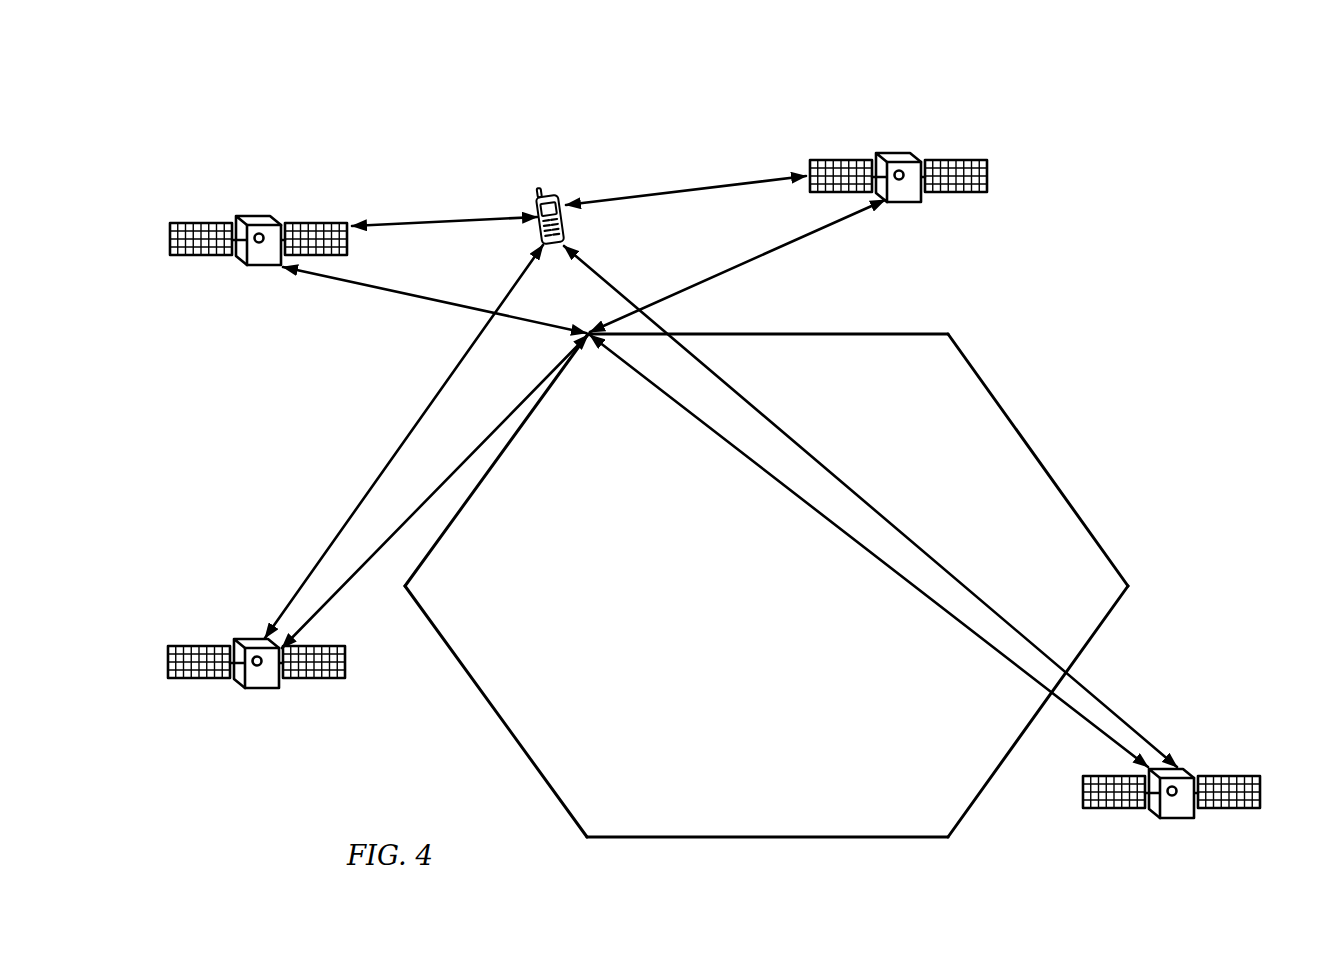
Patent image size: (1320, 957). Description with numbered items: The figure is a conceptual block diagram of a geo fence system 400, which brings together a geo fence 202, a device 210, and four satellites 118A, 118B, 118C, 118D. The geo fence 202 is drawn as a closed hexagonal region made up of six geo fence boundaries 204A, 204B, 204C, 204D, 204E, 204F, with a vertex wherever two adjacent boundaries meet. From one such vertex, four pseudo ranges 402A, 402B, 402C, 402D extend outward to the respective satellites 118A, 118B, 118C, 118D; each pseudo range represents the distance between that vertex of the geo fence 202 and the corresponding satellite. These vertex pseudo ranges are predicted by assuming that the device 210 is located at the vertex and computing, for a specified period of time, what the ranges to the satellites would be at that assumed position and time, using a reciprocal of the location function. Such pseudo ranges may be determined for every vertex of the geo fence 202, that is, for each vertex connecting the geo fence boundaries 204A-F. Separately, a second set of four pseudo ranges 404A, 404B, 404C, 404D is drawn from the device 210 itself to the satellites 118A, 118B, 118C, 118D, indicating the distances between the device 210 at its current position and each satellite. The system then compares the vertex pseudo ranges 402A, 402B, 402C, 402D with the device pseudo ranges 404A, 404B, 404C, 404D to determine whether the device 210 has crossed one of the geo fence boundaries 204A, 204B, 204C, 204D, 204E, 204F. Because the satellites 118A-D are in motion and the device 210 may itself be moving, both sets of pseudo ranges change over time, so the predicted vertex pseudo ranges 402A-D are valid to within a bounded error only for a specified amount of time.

The geo fence system 400 is at (178, 102).
The satellite 118A is at (258, 222).
The satellite 118B is at (900, 158).
The satellite 118C is at (255, 645).
The satellite 118D is at (1172, 818).
The device 210 is at (552, 196).
The geo fence 202 is at (766, 551).
The geo fence boundary 204A is at (795, 334).
The geo fence boundary 204B is at (462, 508).
The geo fence boundary 204C is at (514, 735).
The geo fence boundary 204D is at (808, 837).
The geo fence boundary 204E is at (1073, 662).
The geo fence boundary 204F is at (1062, 492).
The pseudo range 402A is at (435, 299).
The pseudo range 402B is at (685, 289).
The pseudo range 402C is at (379, 548).
The pseudo range 402D is at (880, 562).
The pseudo range 404A is at (435, 221).
The pseudo range 404B is at (695, 188).
The pseudo range 404C is at (405, 440).
The pseudo range 404D is at (866, 500).